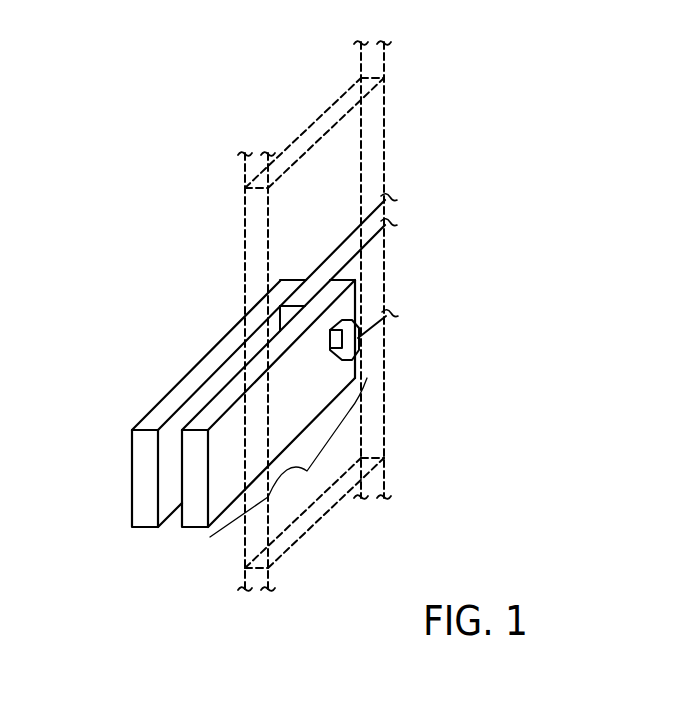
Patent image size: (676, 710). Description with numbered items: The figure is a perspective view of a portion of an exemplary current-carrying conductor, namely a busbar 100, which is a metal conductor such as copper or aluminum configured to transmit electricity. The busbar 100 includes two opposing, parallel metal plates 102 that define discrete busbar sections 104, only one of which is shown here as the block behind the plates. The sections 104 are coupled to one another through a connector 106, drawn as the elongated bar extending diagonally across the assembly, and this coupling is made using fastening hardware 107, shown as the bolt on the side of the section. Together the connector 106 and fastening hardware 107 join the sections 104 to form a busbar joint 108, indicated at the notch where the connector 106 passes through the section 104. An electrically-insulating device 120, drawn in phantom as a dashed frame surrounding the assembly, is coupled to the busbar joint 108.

The busbar 100 is at (157, 253).
The metal plates 102 is at (197, 518).
The busbar section 104 is at (305, 472).
The connector 106 is at (384, 272).
The fastening hardware 107 is at (348, 338).
The busbar joint 108 is at (317, 263).
The electrically-insulating device 120 is at (374, 110).